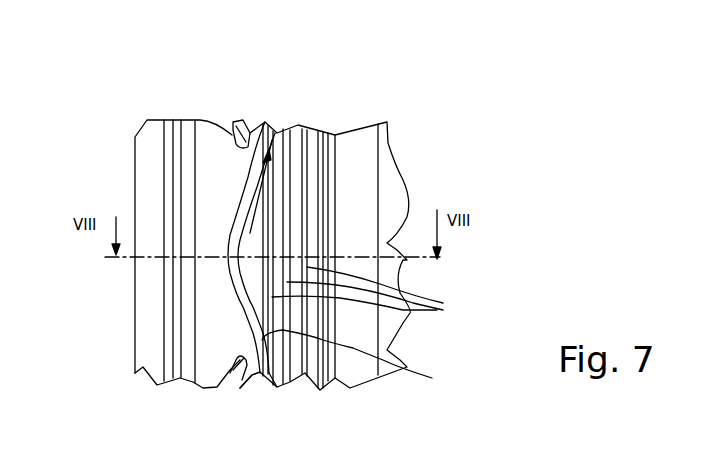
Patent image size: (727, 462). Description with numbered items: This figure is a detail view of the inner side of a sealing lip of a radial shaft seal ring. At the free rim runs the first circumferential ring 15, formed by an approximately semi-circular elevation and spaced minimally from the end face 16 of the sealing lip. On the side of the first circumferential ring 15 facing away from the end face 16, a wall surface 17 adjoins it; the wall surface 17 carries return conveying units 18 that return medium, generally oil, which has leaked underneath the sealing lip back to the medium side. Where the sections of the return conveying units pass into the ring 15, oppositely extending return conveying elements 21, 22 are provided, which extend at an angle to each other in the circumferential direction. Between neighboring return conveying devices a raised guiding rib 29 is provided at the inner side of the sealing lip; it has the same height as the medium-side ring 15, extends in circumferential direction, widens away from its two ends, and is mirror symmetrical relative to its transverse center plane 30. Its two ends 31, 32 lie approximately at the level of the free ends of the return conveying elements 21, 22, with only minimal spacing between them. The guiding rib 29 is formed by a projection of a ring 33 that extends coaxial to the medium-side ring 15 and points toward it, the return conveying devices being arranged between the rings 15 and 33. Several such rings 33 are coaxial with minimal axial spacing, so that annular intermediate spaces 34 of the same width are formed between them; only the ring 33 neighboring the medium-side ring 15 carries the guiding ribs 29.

The first circumferential ring 15 is at (190, 138).
The end face 16 is at (172, 280).
The wall surface 17 is at (212, 310).
The return conveying unit 18 is at (253, 230).
The return conveying element 21 is at (240, 380).
The return conveying element 22 is at (240, 140).
The guiding rib 29 is at (253, 280).
The transverse center plane 30 is at (210, 255).
The end of guiding rib 31 is at (262, 152).
The end of guiding rib 32 is at (366, 371).
The ring 33 is at (262, 367).
The annular intermediate space 34 is at (375, 297).